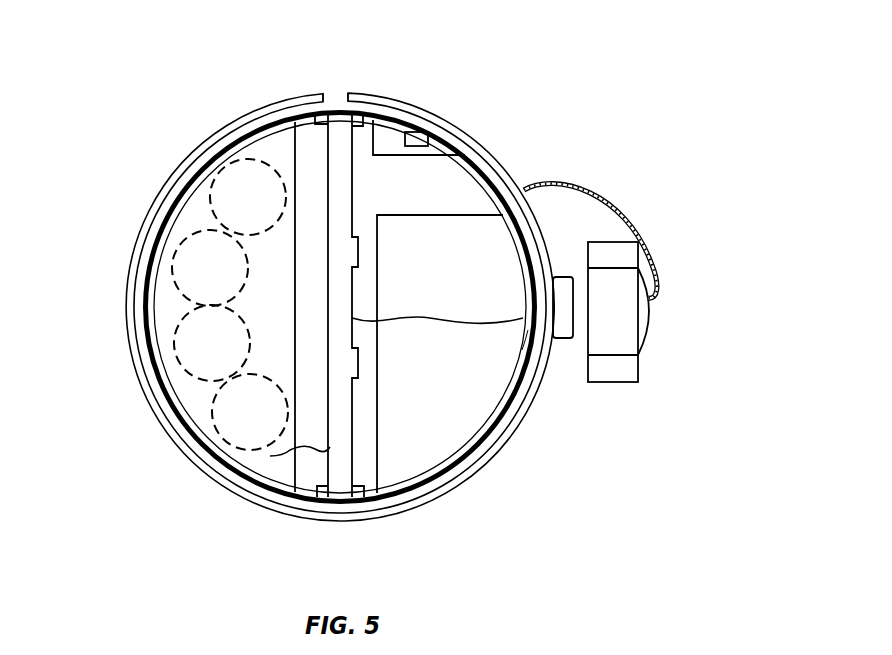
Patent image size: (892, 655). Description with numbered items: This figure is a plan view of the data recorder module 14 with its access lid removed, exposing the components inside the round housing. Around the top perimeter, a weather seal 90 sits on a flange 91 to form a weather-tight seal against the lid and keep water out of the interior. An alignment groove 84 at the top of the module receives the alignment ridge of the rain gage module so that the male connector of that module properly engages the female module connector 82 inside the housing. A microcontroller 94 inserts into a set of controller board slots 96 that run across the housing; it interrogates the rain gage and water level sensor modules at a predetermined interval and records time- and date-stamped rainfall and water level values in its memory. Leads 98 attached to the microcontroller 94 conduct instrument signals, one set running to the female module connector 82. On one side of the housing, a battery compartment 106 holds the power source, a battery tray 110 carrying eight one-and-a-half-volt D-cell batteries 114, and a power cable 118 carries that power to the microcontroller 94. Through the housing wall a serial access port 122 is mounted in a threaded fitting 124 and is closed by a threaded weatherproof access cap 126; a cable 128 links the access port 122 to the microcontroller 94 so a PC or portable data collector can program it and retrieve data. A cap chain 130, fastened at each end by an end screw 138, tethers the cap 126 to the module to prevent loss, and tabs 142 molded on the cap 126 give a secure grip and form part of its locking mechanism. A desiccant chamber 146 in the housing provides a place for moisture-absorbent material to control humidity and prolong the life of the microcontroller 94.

The data recorder module 14 is at (492, 462).
The female module connector 82 is at (428, 138).
The alignment groove 84 is at (343, 88).
The weather seal 90 is at (412, 495).
The flange 91 is at (362, 522).
The microcontroller 94 is at (338, 152).
The controller board slots 96 is at (322, 115).
The leads 98 is at (369, 150).
The battery compartment 106 is at (290, 323).
The battery tray 110 is at (195, 402).
The D-cell batteries 114 is at (192, 272).
The power cable 118 is at (283, 453).
The RS-232 access port 122 is at (533, 338).
The threaded fitting 124 is at (560, 290).
The access cap 126 is at (620, 325).
The cable 128 is at (523, 318).
The cap chain 130 is at (637, 230).
The end screw 138 is at (527, 188).
The tabs 142 is at (617, 257).
The desiccant chamber 146 is at (464, 409).